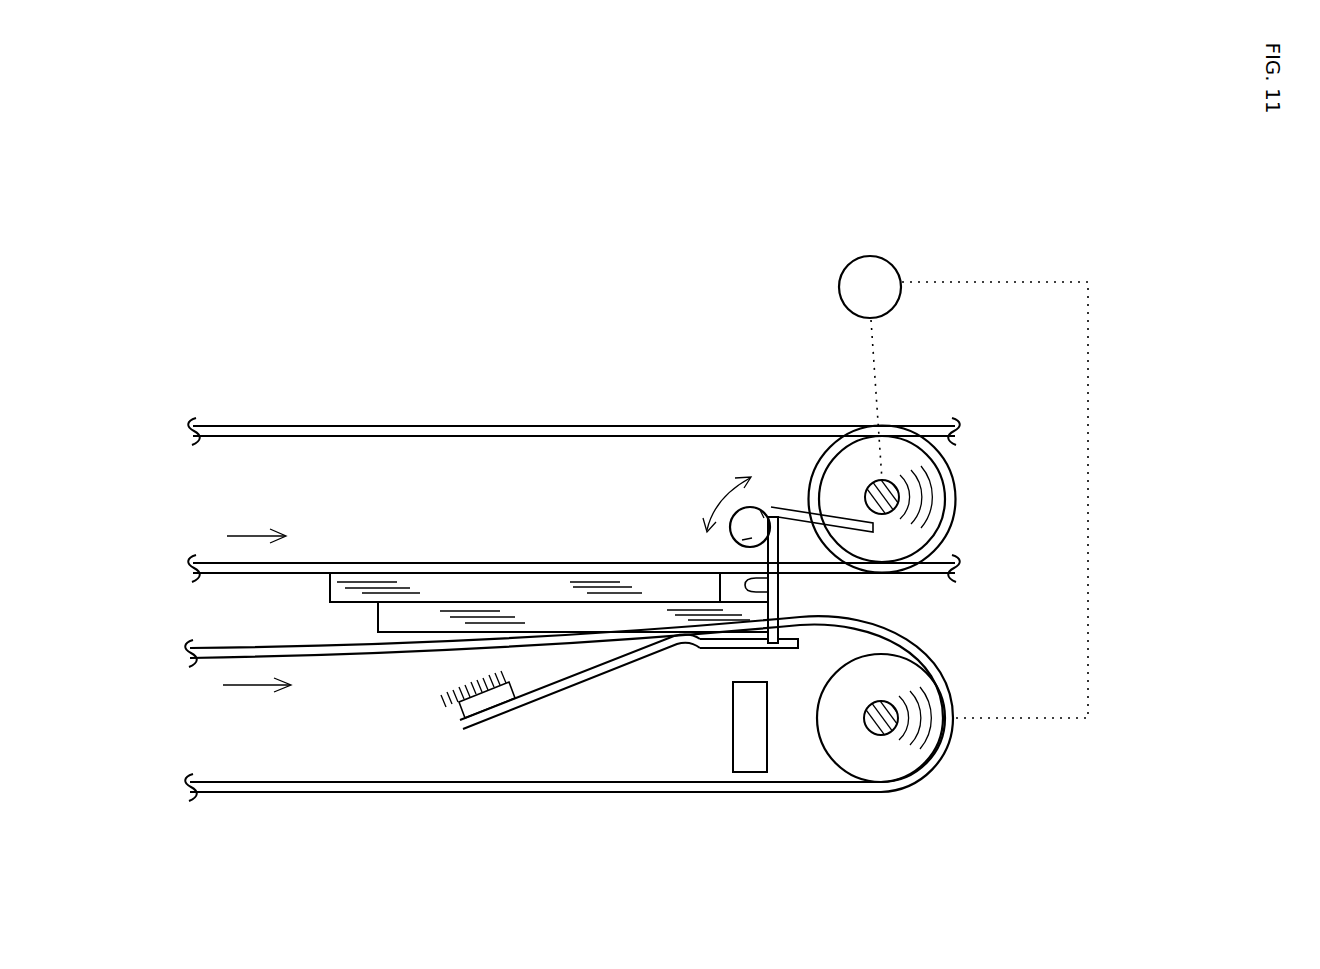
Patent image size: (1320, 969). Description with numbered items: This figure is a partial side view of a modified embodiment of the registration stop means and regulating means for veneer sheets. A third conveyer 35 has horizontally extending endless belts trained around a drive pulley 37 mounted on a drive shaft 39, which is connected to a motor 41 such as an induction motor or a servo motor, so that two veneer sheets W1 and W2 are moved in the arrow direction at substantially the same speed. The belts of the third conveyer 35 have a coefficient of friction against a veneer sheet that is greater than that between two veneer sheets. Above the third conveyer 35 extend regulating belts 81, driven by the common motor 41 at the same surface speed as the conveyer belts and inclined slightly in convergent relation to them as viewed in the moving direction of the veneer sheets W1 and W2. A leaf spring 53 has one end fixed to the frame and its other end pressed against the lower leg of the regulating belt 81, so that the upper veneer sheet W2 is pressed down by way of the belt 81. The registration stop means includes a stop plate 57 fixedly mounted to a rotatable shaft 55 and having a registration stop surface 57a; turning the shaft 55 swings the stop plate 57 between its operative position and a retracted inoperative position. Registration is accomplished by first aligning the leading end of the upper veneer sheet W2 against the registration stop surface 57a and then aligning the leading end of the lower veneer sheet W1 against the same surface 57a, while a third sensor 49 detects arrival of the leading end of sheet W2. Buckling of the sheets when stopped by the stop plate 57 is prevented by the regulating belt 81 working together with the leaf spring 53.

The third conveyer 35 is at (407, 565).
The drive pulley 37 is at (915, 525).
The drive shaft 39 is at (897, 485).
The motor 41 is at (840, 282).
The third sensor 49 is at (743, 730).
The leaf spring 53 is at (581, 691).
The rotatable shaft 55 is at (733, 542).
The stop plate 57 is at (800, 641).
The registration stop surface 57a is at (780, 579).
The regulating belt 81 is at (353, 650).
The first veneer sheet W1 is at (343, 592).
The second veneer sheet W2 is at (397, 620).